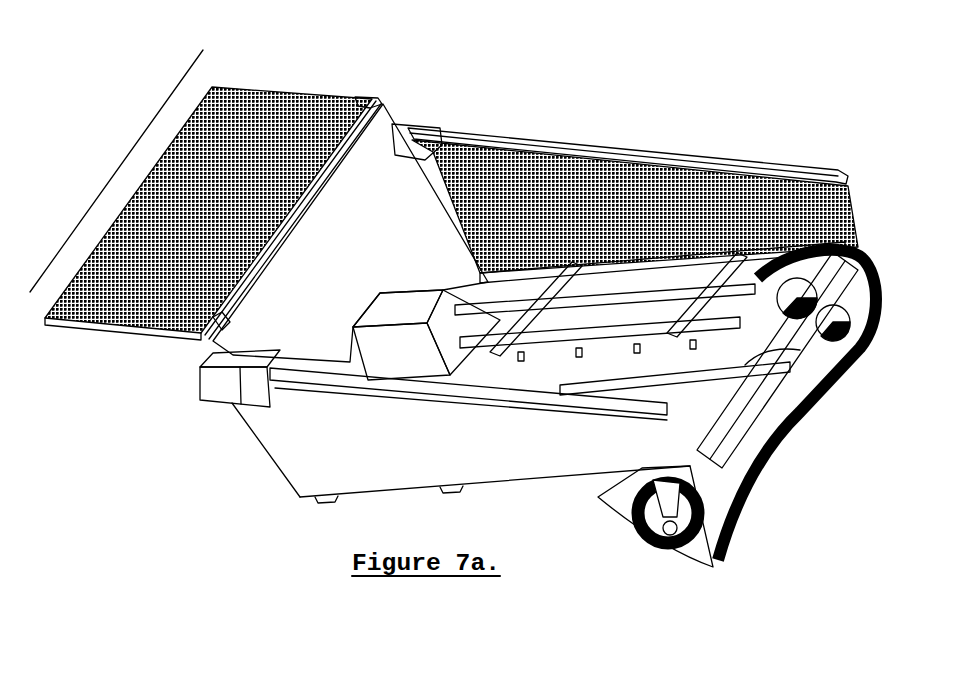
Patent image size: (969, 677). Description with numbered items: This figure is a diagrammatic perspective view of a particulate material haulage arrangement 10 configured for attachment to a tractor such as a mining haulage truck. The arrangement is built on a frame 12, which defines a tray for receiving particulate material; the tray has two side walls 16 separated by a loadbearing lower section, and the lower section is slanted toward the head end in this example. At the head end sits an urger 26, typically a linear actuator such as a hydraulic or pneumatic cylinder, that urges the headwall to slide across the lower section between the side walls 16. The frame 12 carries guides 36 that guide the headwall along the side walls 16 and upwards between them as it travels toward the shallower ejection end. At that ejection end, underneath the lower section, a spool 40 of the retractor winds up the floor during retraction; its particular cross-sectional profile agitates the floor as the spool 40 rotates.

The particulate material haulage arrangement 10 is at (120, 77).
The frame 12 is at (568, 312).
The side walls 16 is at (578, 208).
The urger 26 is at (407, 342).
The guides 36 is at (237, 383).
The spool 40 is at (800, 443).